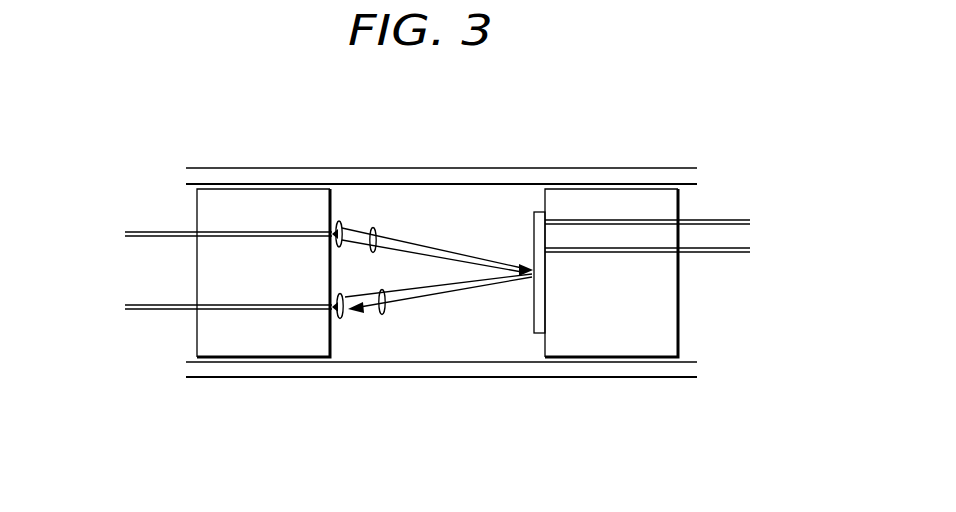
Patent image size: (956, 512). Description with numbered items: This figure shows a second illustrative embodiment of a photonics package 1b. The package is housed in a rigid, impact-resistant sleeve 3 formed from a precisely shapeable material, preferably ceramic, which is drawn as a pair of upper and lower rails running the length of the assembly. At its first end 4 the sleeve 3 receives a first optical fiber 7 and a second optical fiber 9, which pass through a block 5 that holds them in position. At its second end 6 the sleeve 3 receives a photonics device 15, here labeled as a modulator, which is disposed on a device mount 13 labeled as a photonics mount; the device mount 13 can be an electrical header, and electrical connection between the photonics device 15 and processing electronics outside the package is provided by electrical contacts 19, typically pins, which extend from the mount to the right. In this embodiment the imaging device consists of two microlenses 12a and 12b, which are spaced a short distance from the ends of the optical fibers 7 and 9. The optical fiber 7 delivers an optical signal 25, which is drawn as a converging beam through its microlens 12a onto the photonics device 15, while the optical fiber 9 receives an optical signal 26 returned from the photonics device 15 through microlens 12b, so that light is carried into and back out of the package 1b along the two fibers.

The photonics package 1b is at (630, 110).
The sleeve 3 is at (517, 184).
The first end 4 is at (182, 368).
The fiber connector block 5 is at (228, 195).
The second end 6 is at (700, 368).
The first optical fiber 7 is at (140, 229).
The second optical fiber 9 is at (143, 303).
The microlens 12a is at (342, 221).
The microlens 12b is at (342, 318).
The device mount 13 is at (680, 313).
The photonics device 15 is at (535, 334).
The electrical contacts 19 is at (737, 219).
The optical signal 25 is at (375, 227).
The optical signal 26 is at (382, 315).